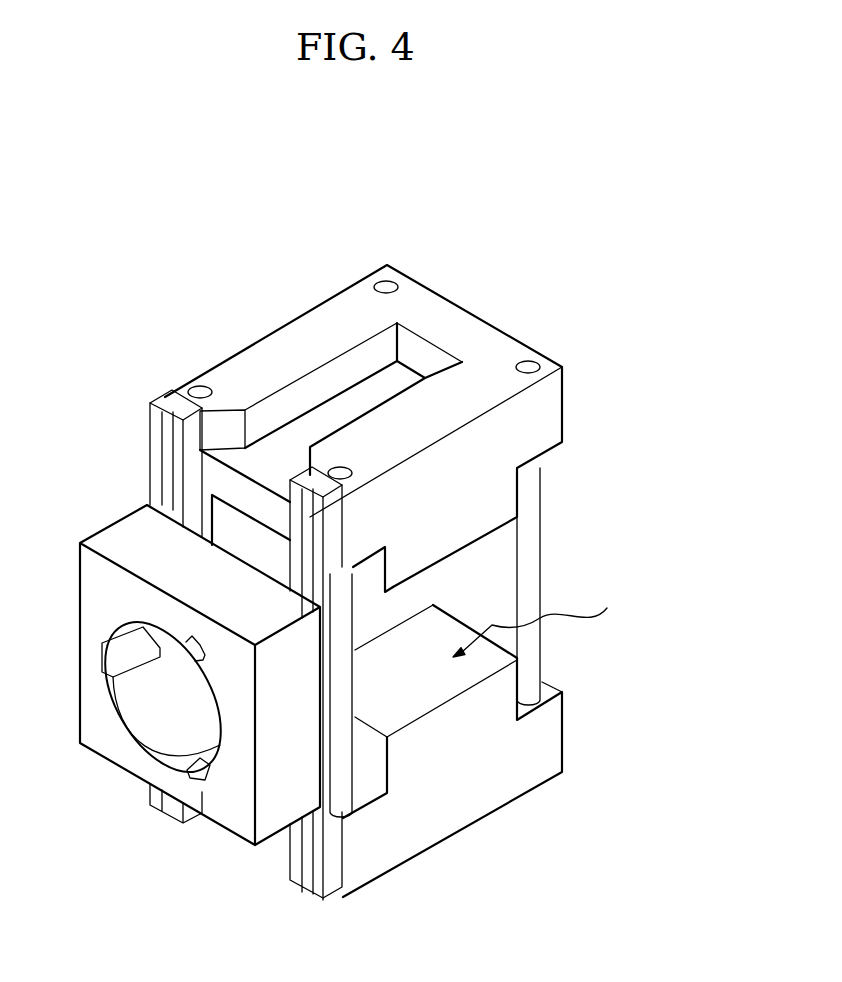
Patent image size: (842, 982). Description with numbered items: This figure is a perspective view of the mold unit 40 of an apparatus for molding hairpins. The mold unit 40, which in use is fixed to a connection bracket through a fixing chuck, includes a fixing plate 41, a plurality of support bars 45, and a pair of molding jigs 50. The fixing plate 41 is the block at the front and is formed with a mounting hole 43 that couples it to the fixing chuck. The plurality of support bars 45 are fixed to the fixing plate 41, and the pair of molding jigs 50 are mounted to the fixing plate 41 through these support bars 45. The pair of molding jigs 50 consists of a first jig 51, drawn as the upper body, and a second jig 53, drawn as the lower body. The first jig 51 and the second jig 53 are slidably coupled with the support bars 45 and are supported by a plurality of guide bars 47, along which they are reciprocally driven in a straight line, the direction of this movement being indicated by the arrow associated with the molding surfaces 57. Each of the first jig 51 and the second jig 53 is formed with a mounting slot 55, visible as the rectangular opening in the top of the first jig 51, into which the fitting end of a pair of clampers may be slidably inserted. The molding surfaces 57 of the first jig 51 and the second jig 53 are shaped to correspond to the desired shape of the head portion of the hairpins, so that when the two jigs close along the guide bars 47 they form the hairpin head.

The mold unit 40 is at (197, 215).
The fixing plate 41 is at (125, 742).
The mounting hole 43 is at (147, 693).
The support bars 45 is at (163, 497).
The guide bars 47 is at (530, 553).
The pair of molding jigs 50 is at (661, 253).
The first jig 51 is at (453, 330).
The second jig 53 is at (477, 800).
The mounting slot 55 is at (325, 387).
The molding surfaces 57 is at (462, 652).